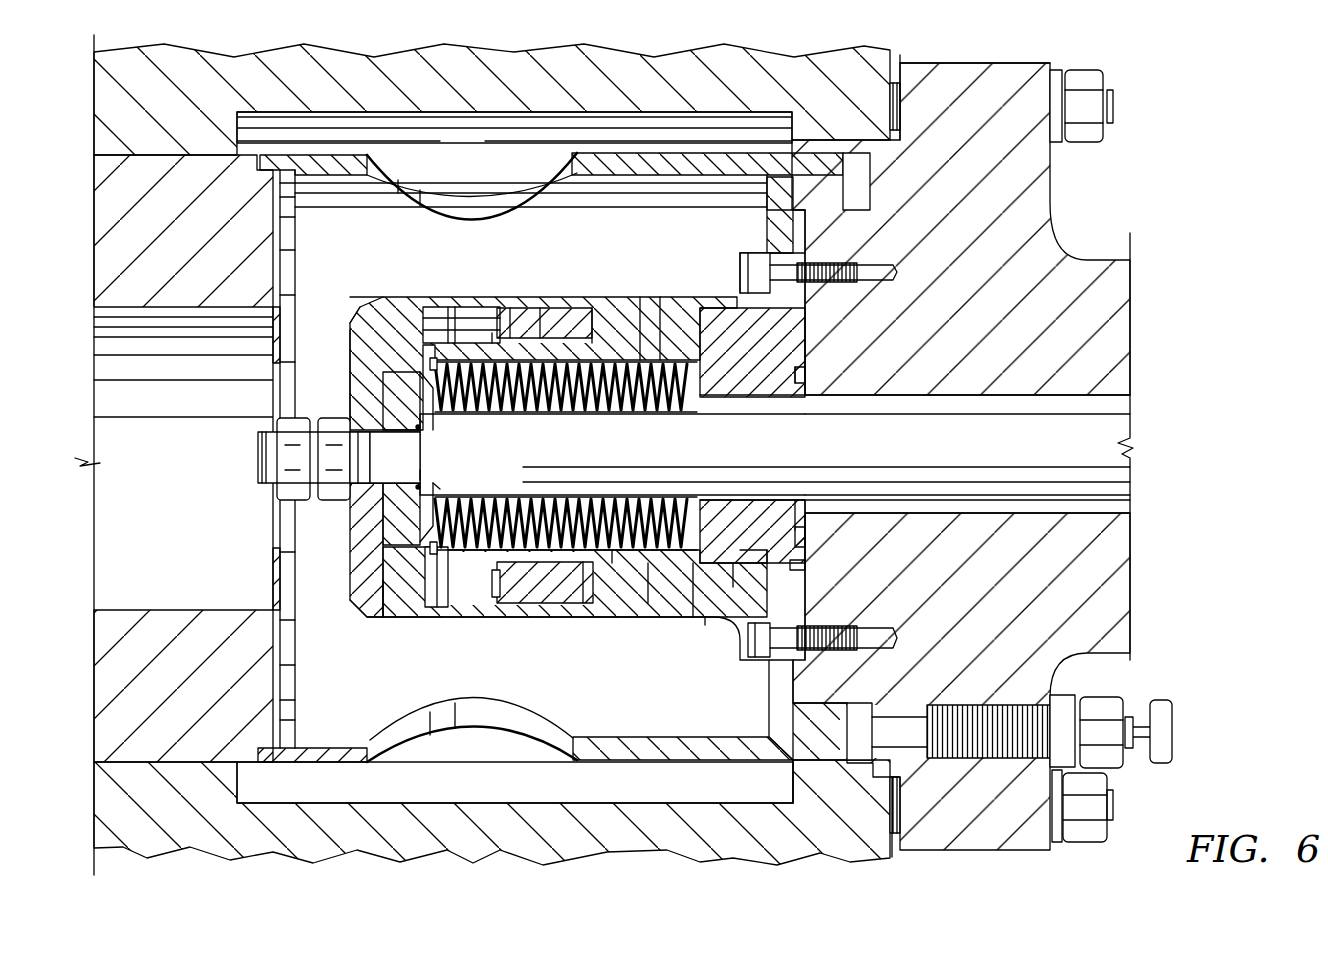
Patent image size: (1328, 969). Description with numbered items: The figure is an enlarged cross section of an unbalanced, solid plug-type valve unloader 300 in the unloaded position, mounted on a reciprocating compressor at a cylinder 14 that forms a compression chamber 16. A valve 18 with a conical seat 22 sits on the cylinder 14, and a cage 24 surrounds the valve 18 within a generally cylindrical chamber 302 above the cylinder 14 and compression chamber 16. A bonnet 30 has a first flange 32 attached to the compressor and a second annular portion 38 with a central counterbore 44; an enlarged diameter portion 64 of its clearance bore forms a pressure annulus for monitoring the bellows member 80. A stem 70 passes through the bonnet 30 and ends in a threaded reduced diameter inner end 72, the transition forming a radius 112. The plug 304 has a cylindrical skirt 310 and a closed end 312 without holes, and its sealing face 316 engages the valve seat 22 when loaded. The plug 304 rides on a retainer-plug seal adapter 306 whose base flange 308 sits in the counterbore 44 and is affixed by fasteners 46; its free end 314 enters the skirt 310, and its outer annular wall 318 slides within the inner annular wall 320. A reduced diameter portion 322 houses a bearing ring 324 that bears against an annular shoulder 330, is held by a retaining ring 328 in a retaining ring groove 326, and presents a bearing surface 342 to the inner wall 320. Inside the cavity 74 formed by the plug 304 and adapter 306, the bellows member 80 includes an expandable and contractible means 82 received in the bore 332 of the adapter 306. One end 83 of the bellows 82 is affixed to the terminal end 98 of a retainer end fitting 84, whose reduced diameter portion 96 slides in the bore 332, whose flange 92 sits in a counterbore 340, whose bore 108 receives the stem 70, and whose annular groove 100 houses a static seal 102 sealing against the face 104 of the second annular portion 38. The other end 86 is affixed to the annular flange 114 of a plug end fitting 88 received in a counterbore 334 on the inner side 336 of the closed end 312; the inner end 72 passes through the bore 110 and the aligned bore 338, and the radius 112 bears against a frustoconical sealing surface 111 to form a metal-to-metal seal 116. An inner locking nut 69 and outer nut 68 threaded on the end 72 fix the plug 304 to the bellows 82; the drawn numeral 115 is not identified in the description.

The cylinder 14 is at (175, 612).
The compression chamber 16 is at (192, 509).
The valve 18 is at (132, 180).
The conical seat 22 is at (280, 615).
The cage 24 is at (490, 720).
The bonnet 30 is at (1085, 258).
The first flange 32 is at (1012, 60).
The second annular portion 38 is at (800, 688).
The central counterbore 44 is at (797, 258).
The fasteners 46 is at (755, 275).
The enlarged diameter portion 64 is at (1022, 405).
The outer nut 68 is at (288, 428).
The inner locking nut 69 is at (333, 423).
The stem 70 is at (968, 427).
The threaded reduced diameter inner end 72 is at (258, 464).
The cavity 74 is at (460, 600).
The bellows member 80 is at (612, 558).
The expandable and contractible means 82 is at (660, 330).
The end 83 is at (648, 605).
The retainer end fitting 84 is at (733, 588).
The end 86 is at (443, 604).
The plug end fitting 88 is at (397, 582).
The flange 92 is at (783, 568).
The reduced diameter portion 96 is at (736, 568).
The terminal end 98 is at (705, 626).
The annular groove 100 is at (793, 385).
The static seal 102 is at (805, 373).
The face 104 is at (803, 523).
The bore 108 is at (745, 432).
The bore 110 is at (357, 480).
The frustoconical sealing surface 111 is at (445, 497).
The radius 112 is at (425, 422).
The annular flange 114 is at (432, 306).
The rod end 115 is at (422, 478).
The metal-to-metal seal 116 is at (440, 484).
The unbalanced solid plug-type valve unloader 300 is at (390, 285).
The generally cylindrical chamber 302 is at (480, 150).
The plug 304 is at (410, 305).
The retainer-plug seal adapter 306 is at (642, 315).
The base flange 308 is at (745, 258).
The cylindrical skirt 310 is at (297, 228).
The closed end 312 is at (352, 348).
The free end 314 is at (462, 315).
The sealing face 316 is at (355, 306).
The outer annular wall 318 is at (596, 325).
The inner annular wall 320 is at (485, 310).
The reduced diameter portion 322 is at (537, 600).
The bearing ring 324 is at (540, 310).
The retaining ring groove 326 is at (496, 599).
The retaining ring 328 is at (510, 320).
The annular shoulder 330 is at (583, 604).
The bore 332 is at (693, 605).
The counterbore 334 is at (378, 542).
The inner side 336 is at (387, 528).
The bore 338 is at (395, 457).
The counterbore 340 is at (805, 568).
The annular bearing surface 342 is at (570, 330).